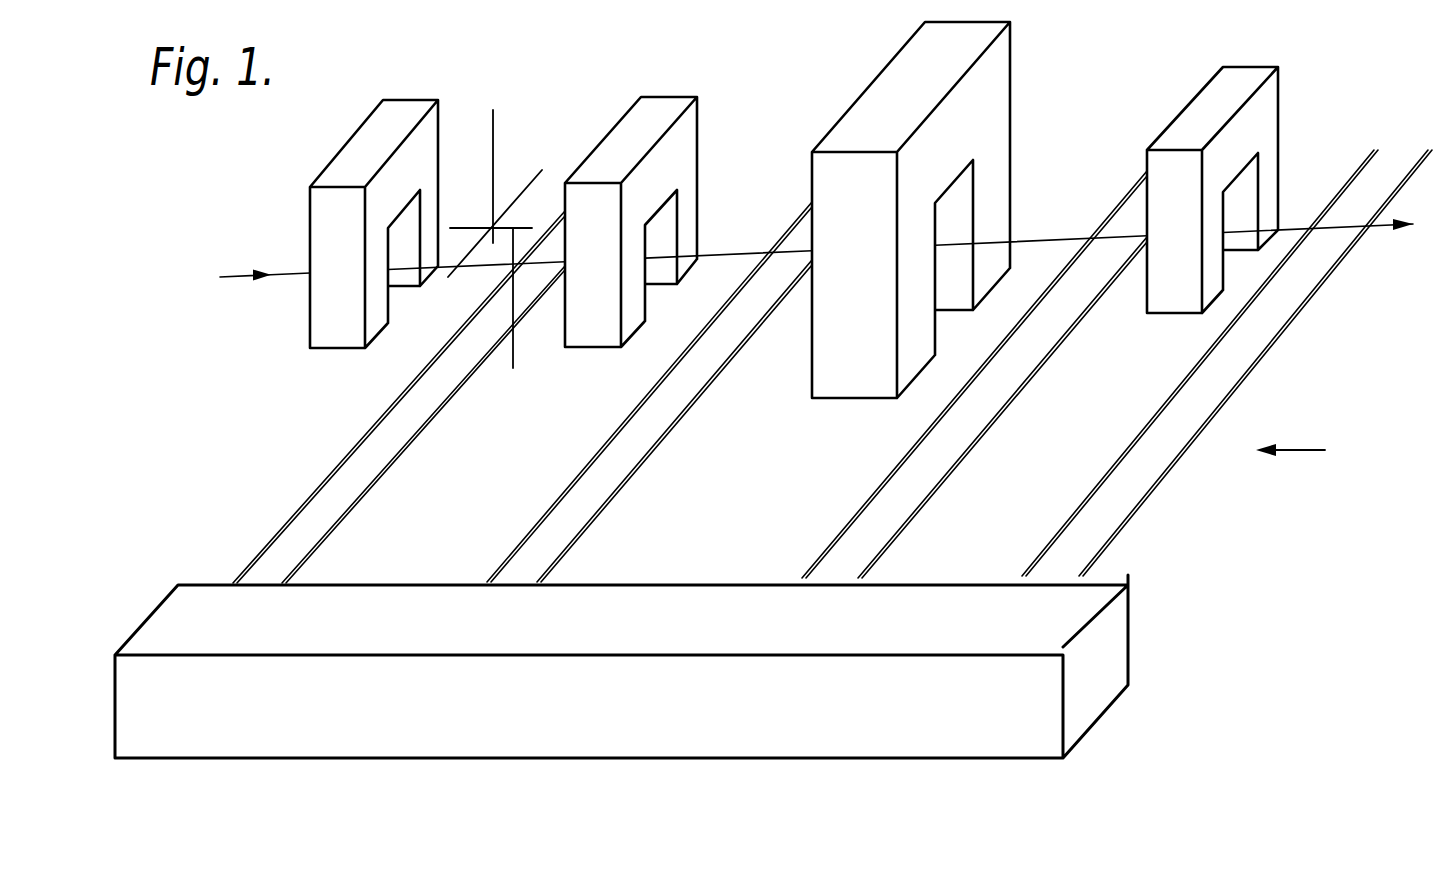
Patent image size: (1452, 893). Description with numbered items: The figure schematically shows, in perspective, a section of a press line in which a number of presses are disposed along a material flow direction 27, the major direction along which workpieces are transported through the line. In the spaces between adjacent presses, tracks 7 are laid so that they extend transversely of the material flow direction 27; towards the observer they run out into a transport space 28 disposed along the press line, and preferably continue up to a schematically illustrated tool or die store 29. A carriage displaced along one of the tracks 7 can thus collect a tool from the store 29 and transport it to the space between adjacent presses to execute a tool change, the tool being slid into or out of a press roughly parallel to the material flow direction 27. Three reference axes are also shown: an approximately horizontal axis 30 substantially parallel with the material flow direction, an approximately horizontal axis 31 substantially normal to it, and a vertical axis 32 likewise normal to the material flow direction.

The tracks 7 is at (382, 445).
The material flow direction 27 is at (1047, 238).
The transport space 28 is at (1316, 449).
The tool or die store 29 is at (833, 753).
The horizontal axis 30 is at (513, 368).
The horizontal axis 31 is at (540, 172).
The vertical axis 32 is at (490, 138).